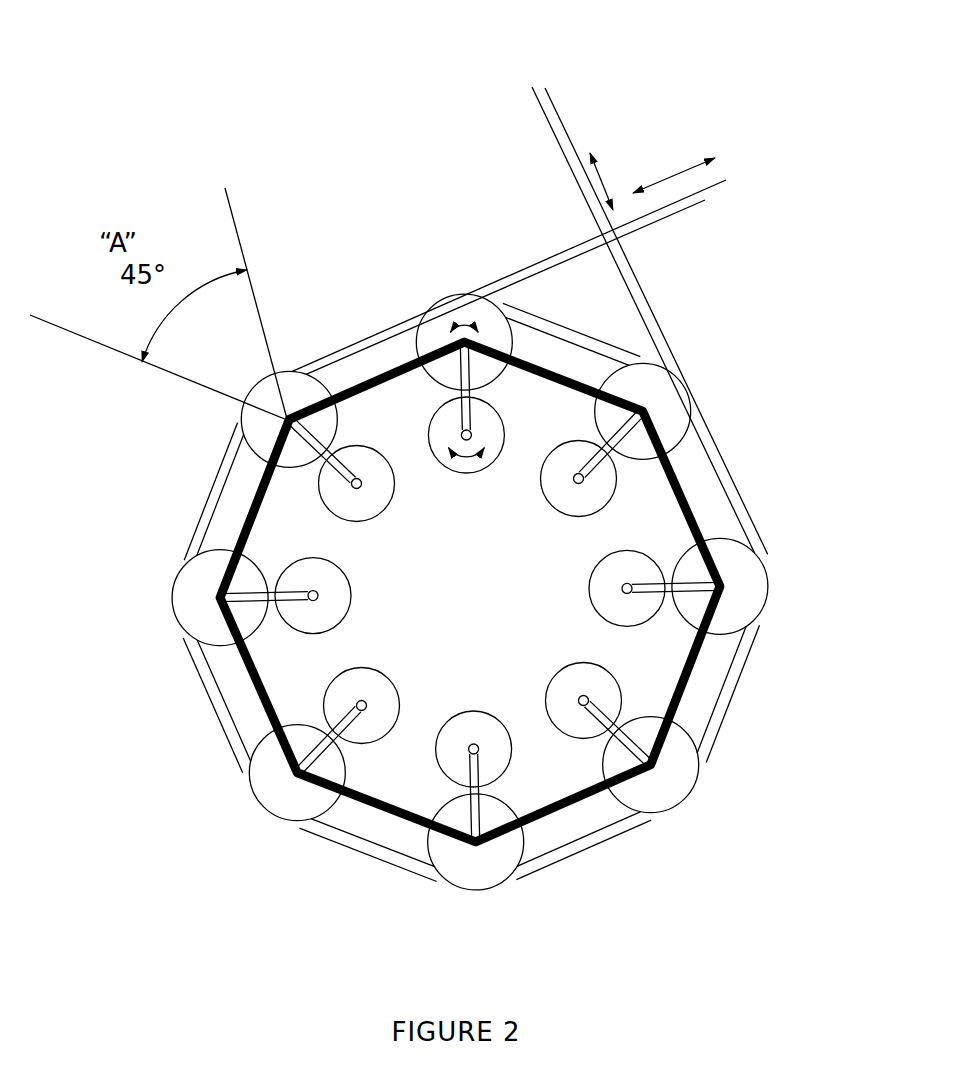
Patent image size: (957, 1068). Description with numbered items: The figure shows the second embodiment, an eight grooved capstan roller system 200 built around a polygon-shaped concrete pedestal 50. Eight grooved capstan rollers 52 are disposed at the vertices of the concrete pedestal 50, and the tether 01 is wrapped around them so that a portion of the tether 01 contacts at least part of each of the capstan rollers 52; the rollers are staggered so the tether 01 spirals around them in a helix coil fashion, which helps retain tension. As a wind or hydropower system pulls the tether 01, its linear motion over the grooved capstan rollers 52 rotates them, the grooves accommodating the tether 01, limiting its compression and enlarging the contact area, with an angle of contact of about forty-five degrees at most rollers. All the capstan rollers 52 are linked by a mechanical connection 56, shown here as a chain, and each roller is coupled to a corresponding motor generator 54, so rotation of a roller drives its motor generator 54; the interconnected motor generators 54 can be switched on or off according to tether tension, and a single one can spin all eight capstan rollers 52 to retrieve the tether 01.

The eight grooved capstan roller system 200 is at (218, 116).
The tether 01 is at (555, 108).
The concrete pedestal 50 is at (505, 592).
The grooved capstan rollers 52 is at (445, 318).
The motor generator 54 is at (462, 465).
The mechanical connection 56 is at (683, 488).